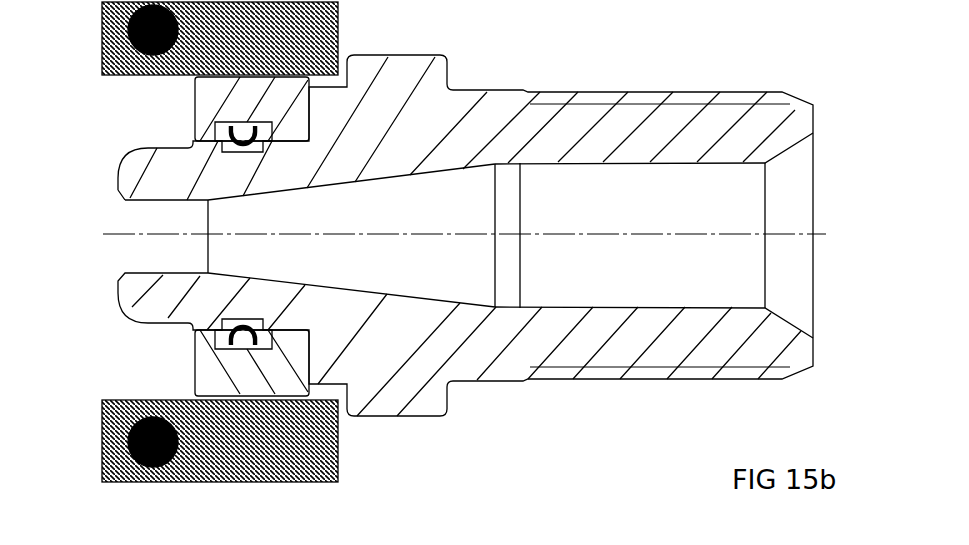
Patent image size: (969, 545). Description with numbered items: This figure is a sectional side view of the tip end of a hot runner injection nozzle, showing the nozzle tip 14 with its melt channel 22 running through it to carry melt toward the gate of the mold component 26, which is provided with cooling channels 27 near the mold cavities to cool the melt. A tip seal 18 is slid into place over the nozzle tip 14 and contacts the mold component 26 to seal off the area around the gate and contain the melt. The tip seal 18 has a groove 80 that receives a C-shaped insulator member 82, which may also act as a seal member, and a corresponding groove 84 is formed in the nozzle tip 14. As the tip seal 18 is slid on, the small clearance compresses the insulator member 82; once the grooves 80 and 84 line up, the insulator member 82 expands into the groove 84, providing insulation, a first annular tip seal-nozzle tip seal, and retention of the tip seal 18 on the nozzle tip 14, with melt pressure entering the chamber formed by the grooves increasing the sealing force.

The nozzle tip 14 is at (552, 337).
The tip seal 18 is at (232, 385).
The melt channel 22 is at (655, 240).
The mold component 26 is at (310, 27).
The cooling channels 27 is at (148, 14).
The groove 80 is at (262, 318).
The insulator member 82 is at (245, 321).
The groove 84 is at (257, 353).